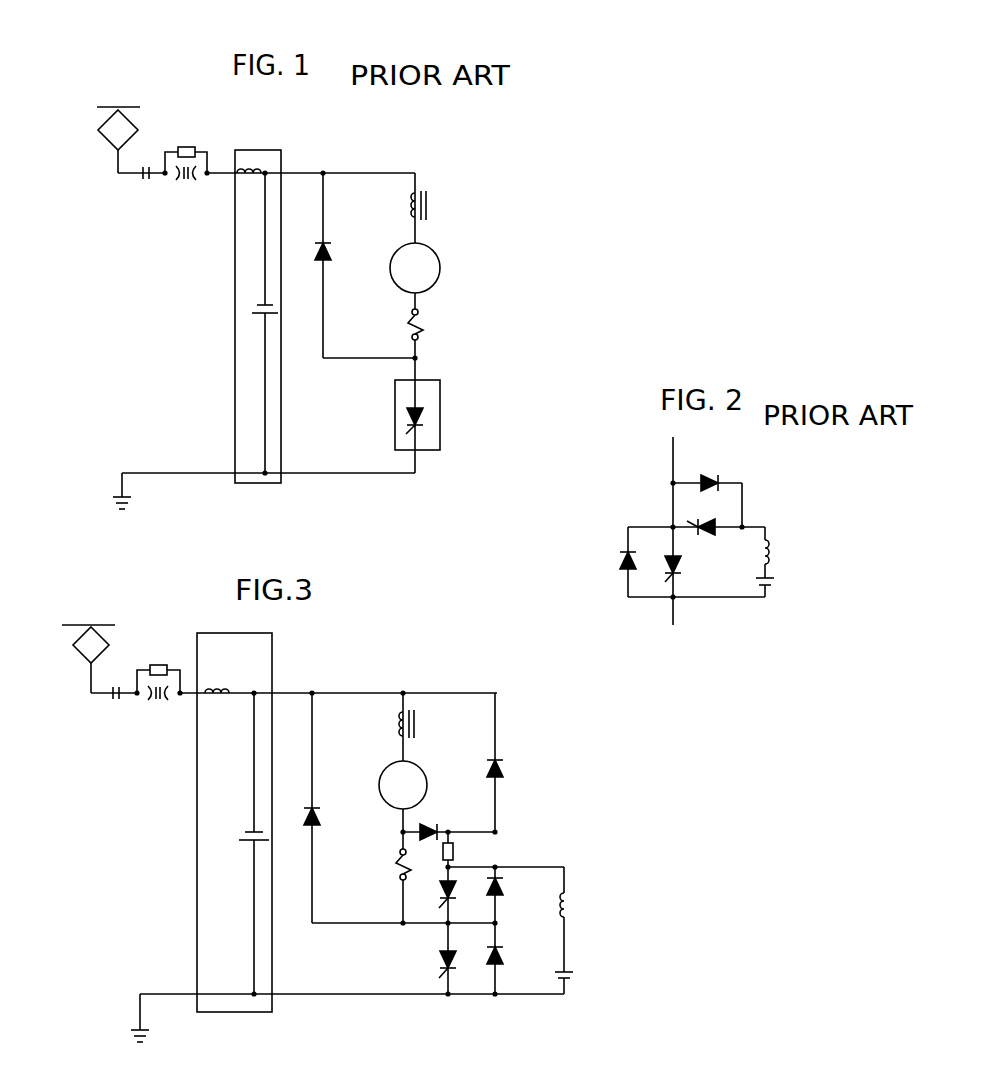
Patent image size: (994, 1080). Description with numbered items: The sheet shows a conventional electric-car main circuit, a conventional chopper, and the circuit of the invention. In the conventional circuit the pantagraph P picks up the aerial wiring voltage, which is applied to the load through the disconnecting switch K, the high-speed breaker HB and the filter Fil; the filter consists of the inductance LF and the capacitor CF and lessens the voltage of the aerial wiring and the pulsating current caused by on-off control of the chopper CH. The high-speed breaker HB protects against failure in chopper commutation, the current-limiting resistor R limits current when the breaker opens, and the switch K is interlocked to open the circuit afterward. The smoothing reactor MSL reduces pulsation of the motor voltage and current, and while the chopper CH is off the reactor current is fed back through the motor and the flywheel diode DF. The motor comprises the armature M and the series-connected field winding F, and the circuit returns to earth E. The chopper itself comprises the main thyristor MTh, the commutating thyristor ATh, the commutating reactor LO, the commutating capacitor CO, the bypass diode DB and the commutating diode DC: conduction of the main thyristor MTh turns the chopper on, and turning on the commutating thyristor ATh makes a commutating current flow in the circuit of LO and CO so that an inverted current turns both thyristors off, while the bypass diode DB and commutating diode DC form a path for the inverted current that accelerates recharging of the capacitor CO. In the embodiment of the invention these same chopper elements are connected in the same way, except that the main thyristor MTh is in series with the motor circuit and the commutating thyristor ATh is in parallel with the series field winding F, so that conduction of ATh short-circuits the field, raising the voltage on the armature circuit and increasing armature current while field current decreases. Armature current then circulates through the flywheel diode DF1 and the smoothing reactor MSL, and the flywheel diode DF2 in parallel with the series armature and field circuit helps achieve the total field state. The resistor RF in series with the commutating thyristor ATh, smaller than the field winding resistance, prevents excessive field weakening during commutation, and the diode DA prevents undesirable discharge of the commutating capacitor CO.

In FIG. 1, the pantagraph P is at (105, 143).
In FIG. 3, the pantagraph P is at (81, 658).
In FIG. 1, the disconnecting switch K is at (141, 176).
In FIG. 3, the disconnecting switch K is at (111, 706).
In FIG. 1, the high-speed breaker HB is at (177, 177).
In FIG. 3, the high-speed breaker HB is at (158, 705).
In FIG. 1, the current-limiting resistor R is at (195, 153).
In FIG. 3, the current-limiting resistor R is at (161, 662).
In FIG. 1, the filter Fil is at (330, 165).
In FIG. 3, the filter Fil is at (272, 652).
In FIG. 1, the filter inductance LF is at (250, 185).
In FIG. 3, the filter inductance LF is at (228, 657).
In FIG. 1, the filter capacitor CF is at (252, 312).
In FIG. 3, the filter capacitor CF is at (244, 840).
In FIG. 1, the earth E is at (129, 496).
In FIG. 3, the earth E is at (145, 1038).
In FIG. 1, the flywheel diode DF is at (319, 254).
In FIG. 1, the smoothing reactor MSL is at (430, 208).
In FIG. 3, the smoothing reactor MSL is at (398, 727).
In FIG. 1, the armature of the motor M is at (415, 268).
In FIG. 3, the armature of the motor M is at (403, 785).
In FIG. 1, the series-connected field winding F is at (426, 323).
In FIG. 3, the series-connected field winding F is at (392, 879).
In FIG. 1, the chopper CH is at (440, 400).
In FIG. 2, the commutating diode DC is at (719, 477).
In FIG. 3, the commutating diode DC is at (504, 888).
In FIG. 2, the commutating thyristor ATh is at (721, 535).
In FIG. 3, the commutating thyristor ATh is at (437, 886).
In FIG. 2, the main thyristor MTh is at (682, 577).
In FIG. 3, the main thyristor MTh is at (437, 964).
In FIG. 2, the bypass diode DB is at (620, 560).
In FIG. 3, the bypass diode DB is at (504, 956).
In FIG. 2, the commutating reactor LO is at (771, 540).
In FIG. 3, the commutating reactor LO is at (569, 905).
In FIG. 2, the commutating capacitor CO is at (773, 590).
In FIG. 3, the commutating capacitor CO is at (572, 985).
In FIG. 3, the flywheel diode DF1 is at (504, 770).
In FIG. 3, the flywheel diode DF2 is at (316, 828).
In FIG. 3, the diode DA is at (430, 823).
In FIG. 3, the resistor RF is at (462, 847).